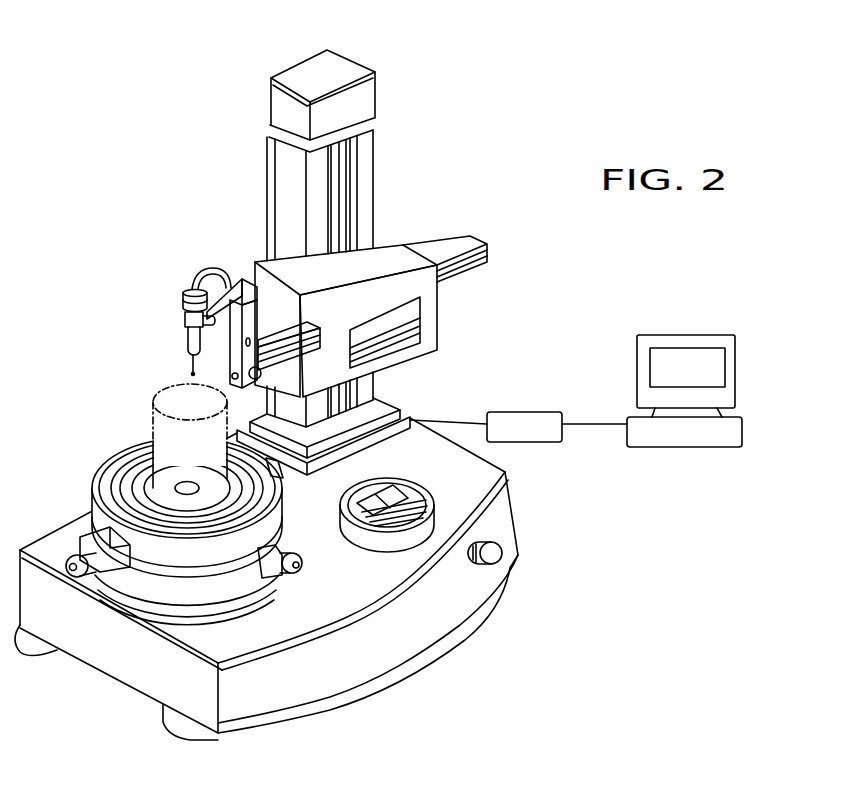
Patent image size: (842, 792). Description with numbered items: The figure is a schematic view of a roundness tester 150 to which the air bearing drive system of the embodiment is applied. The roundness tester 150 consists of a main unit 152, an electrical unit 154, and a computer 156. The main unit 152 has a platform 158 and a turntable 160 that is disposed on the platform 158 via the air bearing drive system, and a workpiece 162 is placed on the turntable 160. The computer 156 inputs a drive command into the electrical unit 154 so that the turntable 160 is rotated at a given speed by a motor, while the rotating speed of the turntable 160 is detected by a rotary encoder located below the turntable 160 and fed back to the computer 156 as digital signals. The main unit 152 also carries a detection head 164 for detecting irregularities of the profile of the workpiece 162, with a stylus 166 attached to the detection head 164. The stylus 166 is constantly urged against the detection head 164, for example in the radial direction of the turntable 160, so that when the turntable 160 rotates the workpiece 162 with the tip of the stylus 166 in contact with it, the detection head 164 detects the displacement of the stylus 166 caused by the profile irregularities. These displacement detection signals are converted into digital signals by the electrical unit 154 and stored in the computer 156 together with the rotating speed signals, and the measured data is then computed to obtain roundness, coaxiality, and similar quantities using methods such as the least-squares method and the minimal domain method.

The roundness tester 150 is at (525, 152).
The main unit 152 is at (127, 237).
The electrical unit 154 is at (518, 412).
The computer 156 is at (685, 438).
The platform 158 is at (332, 670).
The turntable 160 is at (112, 457).
The workpiece 162 is at (150, 402).
The detection head 164 is at (186, 328).
The stylus 166 is at (190, 362).